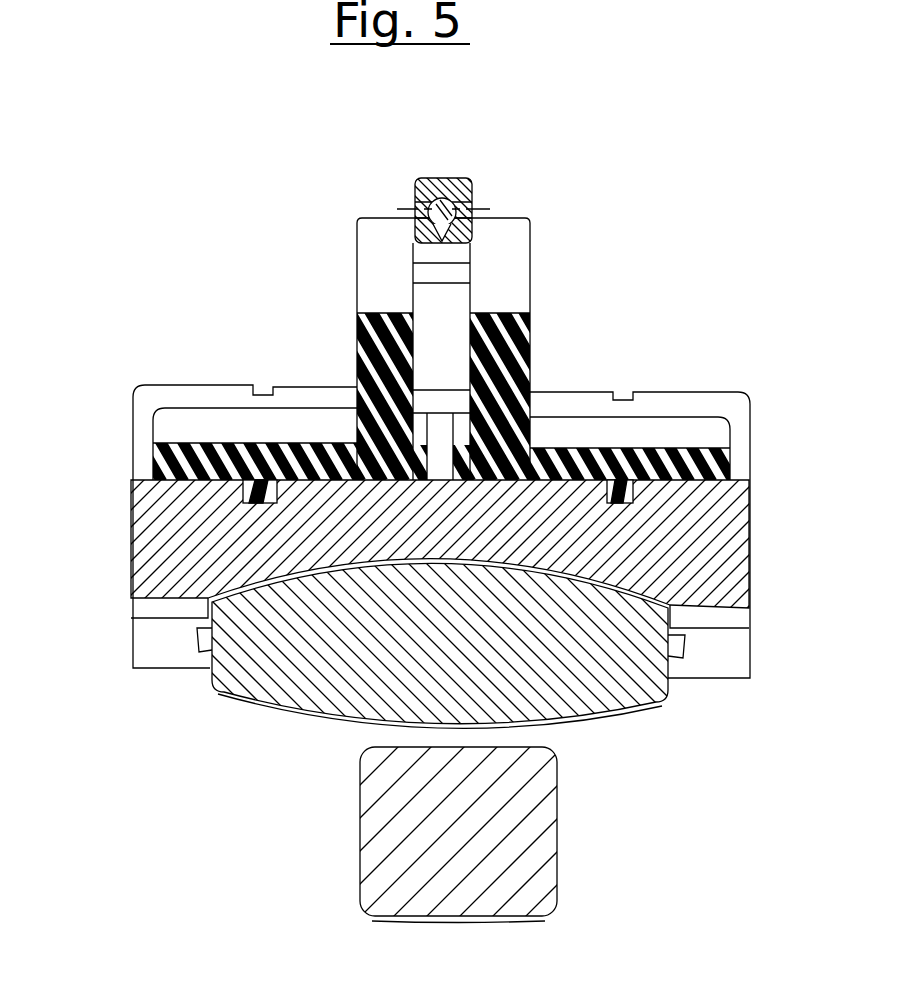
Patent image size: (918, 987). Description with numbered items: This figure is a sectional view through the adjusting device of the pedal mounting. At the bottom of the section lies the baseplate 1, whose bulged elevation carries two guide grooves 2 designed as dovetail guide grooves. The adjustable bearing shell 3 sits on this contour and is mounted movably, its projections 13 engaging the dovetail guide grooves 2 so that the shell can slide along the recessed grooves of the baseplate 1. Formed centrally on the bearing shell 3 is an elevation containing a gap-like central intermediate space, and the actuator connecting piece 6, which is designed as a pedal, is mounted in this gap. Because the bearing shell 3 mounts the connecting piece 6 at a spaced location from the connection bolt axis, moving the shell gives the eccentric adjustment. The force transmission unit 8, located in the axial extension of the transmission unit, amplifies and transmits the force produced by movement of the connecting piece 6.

The baseplate 1 is at (203, 550).
The guide grooves 2 is at (223, 442).
The adjustable bearing shell 3 is at (507, 253).
The actuator connecting piece 6 is at (417, 187).
The force transmission unit 8 is at (313, 682).
The projections 13 is at (253, 490).